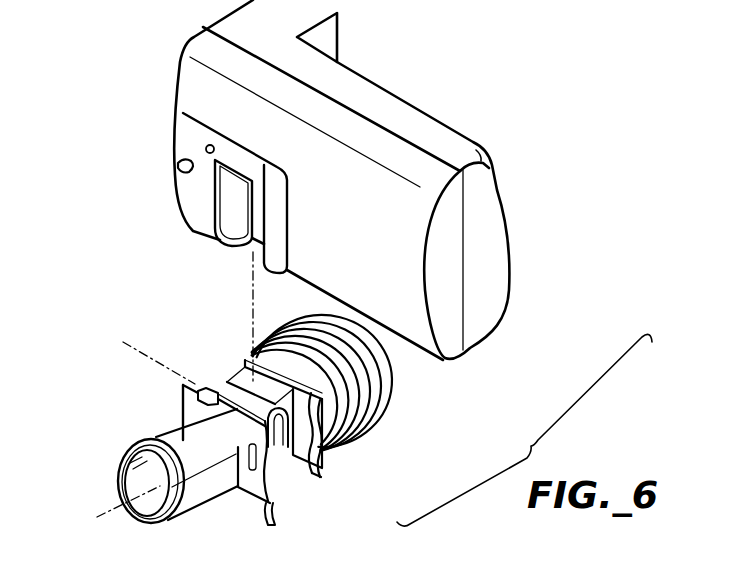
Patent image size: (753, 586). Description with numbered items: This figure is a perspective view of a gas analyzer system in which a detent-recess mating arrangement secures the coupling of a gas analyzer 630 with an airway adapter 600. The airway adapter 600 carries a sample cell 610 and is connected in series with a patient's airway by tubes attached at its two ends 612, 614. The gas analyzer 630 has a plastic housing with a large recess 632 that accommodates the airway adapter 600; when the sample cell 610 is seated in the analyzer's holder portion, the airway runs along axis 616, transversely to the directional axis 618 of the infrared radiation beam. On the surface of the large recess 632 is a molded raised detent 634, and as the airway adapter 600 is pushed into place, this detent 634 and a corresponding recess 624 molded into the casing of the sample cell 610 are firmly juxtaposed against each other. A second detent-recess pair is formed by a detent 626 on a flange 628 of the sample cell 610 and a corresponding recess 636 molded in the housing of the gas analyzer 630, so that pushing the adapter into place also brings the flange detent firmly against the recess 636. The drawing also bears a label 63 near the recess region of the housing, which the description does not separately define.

The airway adapter 600 is at (360, 445).
The sample cell 610 is at (292, 462).
The end 612 is at (126, 470).
The end 614 is at (393, 391).
The axis 616 is at (100, 507).
The directional axis 618 is at (130, 342).
The recess 624 is at (207, 388).
The detent 626 is at (181, 402).
The flange 628 is at (182, 389).
The window opening 63 is at (232, 205).
The gas analyzer 630 is at (383, 86).
The large recess 632 is at (277, 194).
The raised detent 634 is at (207, 146).
The recess 636 is at (181, 163).